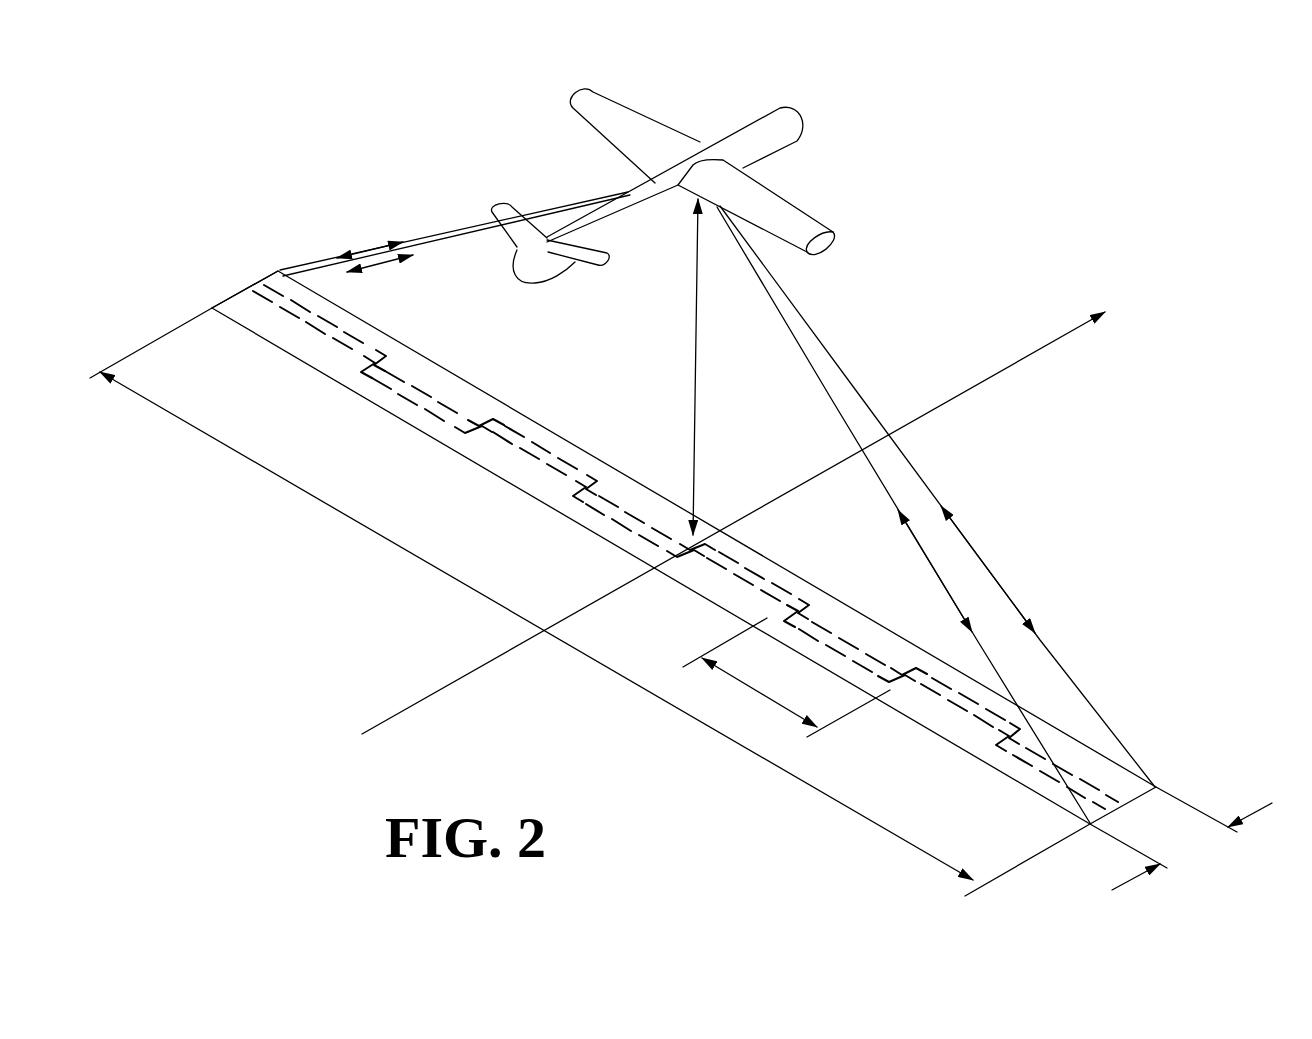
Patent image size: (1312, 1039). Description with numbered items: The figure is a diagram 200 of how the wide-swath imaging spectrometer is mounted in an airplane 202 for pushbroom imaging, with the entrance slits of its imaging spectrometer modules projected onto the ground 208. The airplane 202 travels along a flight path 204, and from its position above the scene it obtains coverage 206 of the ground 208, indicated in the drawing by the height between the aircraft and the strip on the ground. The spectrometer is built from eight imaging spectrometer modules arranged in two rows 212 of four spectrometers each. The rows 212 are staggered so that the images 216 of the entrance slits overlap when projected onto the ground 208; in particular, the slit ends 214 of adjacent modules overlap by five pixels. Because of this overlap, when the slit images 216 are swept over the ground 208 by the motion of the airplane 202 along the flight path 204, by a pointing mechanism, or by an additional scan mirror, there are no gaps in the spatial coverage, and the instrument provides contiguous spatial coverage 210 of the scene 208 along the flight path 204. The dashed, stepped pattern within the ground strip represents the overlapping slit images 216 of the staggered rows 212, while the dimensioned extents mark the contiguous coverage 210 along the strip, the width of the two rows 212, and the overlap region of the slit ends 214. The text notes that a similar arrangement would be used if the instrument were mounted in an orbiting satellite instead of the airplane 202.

The diagram 200 is at (1030, 218).
The airplane 202 is at (783, 132).
The flight path 204 is at (980, 383).
The coverage 206 is at (697, 373).
The ground 208 is at (240, 292).
The contiguous spatial coverage 210 is at (590, 602).
The rows 212 is at (1190, 847).
The slit ends 214 is at (757, 697).
The images of entrance slits 216 is at (562, 504).